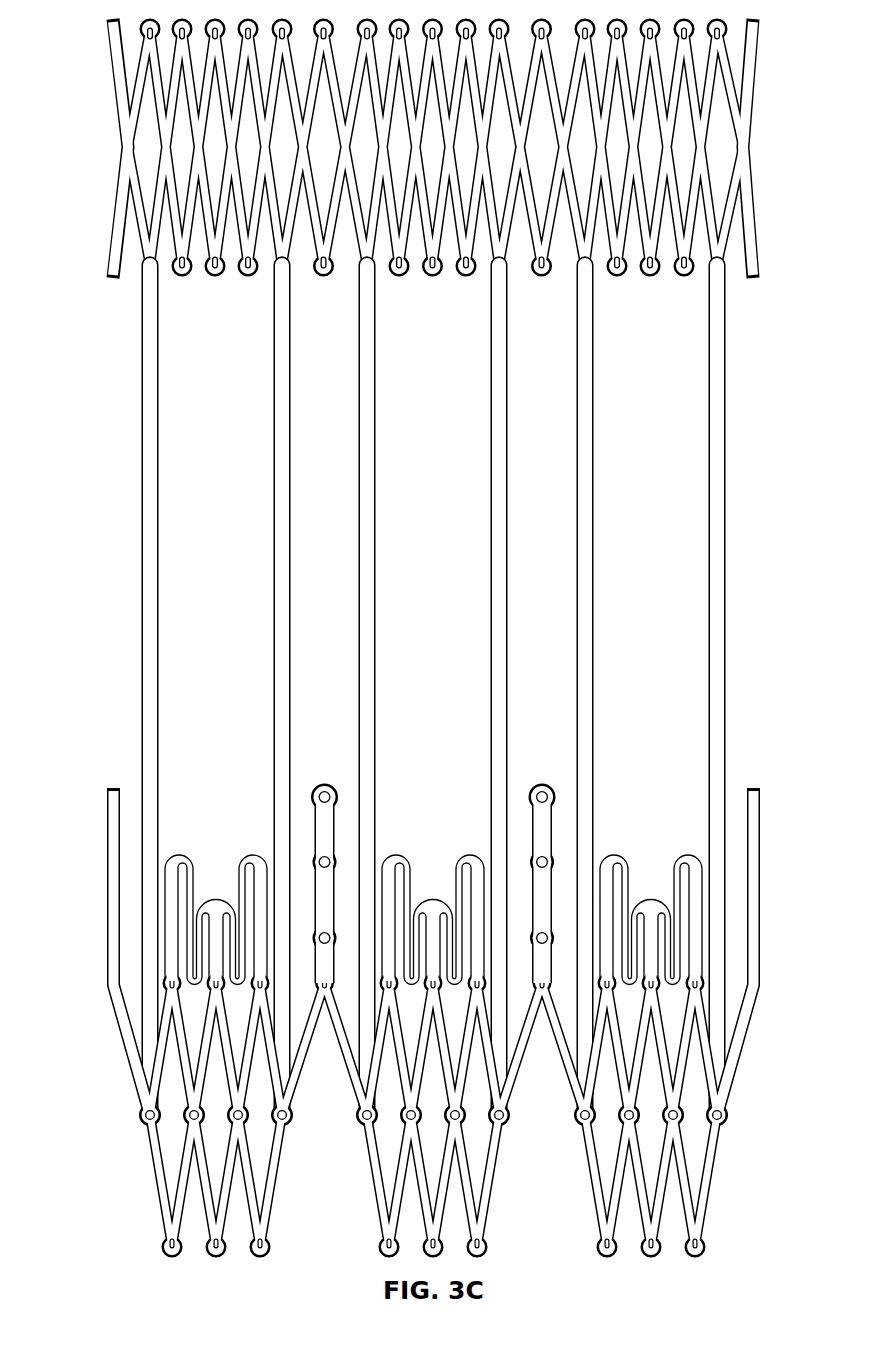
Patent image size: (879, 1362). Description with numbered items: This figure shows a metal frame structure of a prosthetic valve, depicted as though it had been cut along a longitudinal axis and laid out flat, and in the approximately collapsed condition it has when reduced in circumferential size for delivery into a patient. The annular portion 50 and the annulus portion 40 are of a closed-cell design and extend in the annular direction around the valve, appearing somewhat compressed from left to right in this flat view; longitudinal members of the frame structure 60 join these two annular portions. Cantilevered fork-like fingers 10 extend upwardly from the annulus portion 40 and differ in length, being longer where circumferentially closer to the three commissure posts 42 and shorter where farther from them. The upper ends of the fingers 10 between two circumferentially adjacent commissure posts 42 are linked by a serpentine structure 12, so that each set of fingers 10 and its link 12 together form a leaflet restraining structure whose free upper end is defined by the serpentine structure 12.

The fingers 10 is at (412, 640).
The serpentine structure 12 is at (193, 884).
The annulus portion 40 is at (160, 1261).
The commissure posts 42 is at (549, 823).
The annular portion 50 is at (103, 20).
The metal frame structure 60 is at (721, 612).